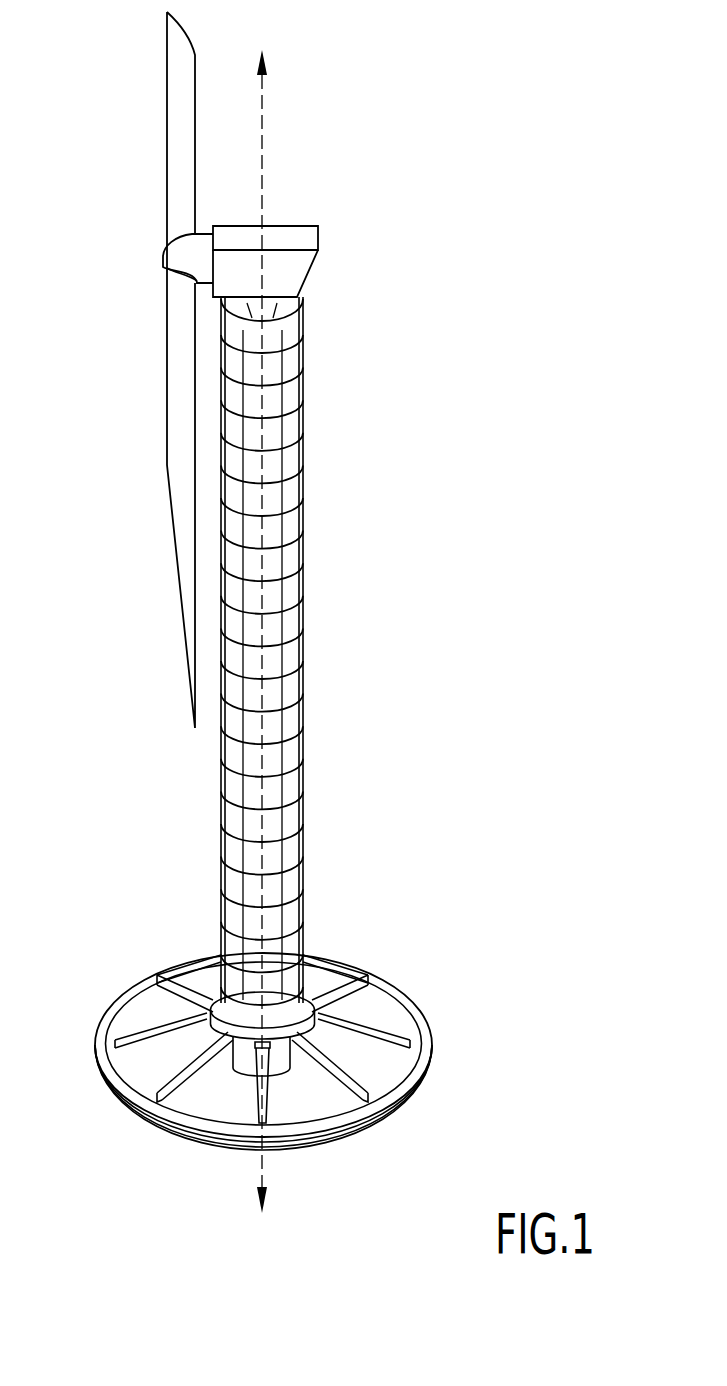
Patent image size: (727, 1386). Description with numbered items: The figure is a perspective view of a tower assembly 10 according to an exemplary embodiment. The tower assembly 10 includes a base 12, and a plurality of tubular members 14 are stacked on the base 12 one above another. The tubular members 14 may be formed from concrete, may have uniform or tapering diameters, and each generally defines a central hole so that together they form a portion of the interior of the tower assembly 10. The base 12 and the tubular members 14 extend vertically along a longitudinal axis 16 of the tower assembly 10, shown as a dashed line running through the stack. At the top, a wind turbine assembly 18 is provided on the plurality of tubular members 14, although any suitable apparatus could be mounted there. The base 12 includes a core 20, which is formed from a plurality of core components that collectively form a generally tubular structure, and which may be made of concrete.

The tower assembly 10 is at (493, 98).
The base 12 is at (437, 992).
The tubular members 14 is at (295, 455).
The longitudinal axis 16 is at (262, 154).
The wind turbine assembly 18 is at (142, 260).
The core 20 is at (323, 997).